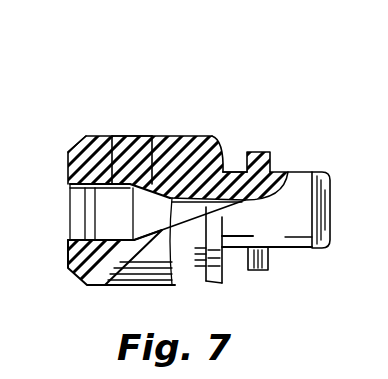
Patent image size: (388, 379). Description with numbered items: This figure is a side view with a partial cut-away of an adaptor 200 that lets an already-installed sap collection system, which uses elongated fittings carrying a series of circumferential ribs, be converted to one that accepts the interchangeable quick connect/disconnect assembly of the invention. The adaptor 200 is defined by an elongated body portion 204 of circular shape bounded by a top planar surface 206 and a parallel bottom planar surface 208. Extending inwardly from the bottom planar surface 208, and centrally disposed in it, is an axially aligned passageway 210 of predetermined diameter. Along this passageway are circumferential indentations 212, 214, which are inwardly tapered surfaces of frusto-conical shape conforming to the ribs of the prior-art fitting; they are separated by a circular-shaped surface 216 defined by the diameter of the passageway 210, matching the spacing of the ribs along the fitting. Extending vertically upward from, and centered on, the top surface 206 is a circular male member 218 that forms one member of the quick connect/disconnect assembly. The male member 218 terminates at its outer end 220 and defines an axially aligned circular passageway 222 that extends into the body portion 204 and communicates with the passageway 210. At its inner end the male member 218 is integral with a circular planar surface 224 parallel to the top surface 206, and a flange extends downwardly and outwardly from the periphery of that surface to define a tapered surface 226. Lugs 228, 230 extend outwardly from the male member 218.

The adaptor 200 is at (100, 110).
The elongated body portion 204 is at (141, 126).
The top planar surface 206 is at (211, 136).
The bottom planar surface 208 is at (70, 250).
The axial alined passageway 210 is at (68, 203).
The circumferential indentation 212 is at (152, 138).
The circumferential indentation 214 is at (80, 143).
The circular-shaped surface 216 is at (112, 137).
The male member 218 is at (301, 160).
The outer end 220 is at (333, 200).
The circular-shaped passageway 222 is at (178, 284).
The circular-shaped planar surface 224 is at (226, 158).
The tapered surface 226 is at (223, 150).
The lug 228 is at (256, 263).
The lug 230 is at (271, 163).